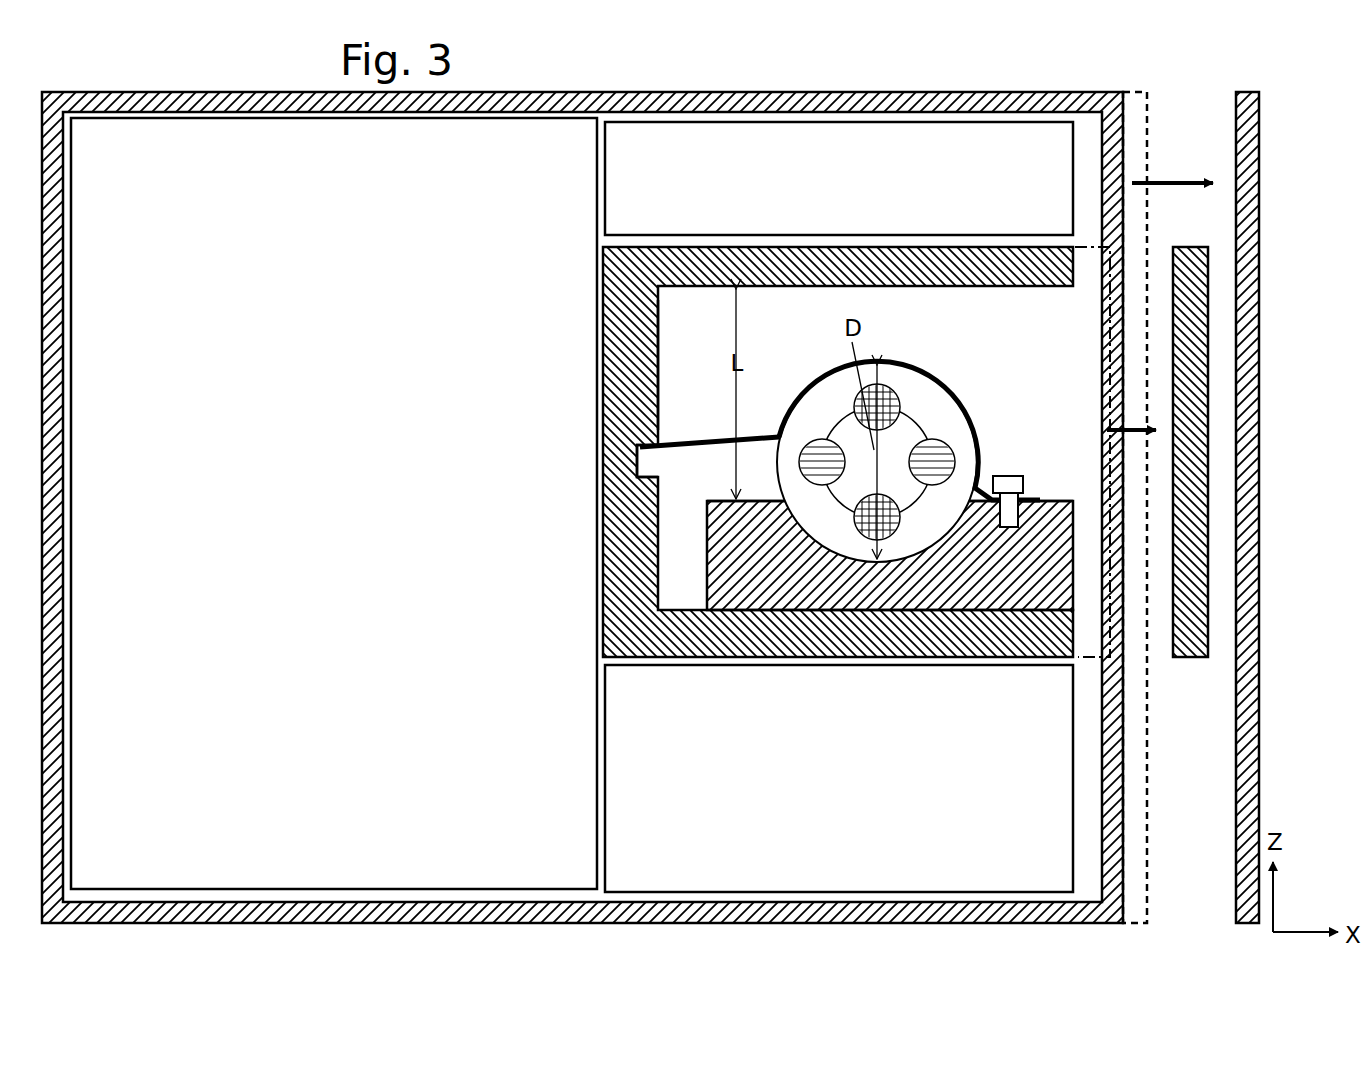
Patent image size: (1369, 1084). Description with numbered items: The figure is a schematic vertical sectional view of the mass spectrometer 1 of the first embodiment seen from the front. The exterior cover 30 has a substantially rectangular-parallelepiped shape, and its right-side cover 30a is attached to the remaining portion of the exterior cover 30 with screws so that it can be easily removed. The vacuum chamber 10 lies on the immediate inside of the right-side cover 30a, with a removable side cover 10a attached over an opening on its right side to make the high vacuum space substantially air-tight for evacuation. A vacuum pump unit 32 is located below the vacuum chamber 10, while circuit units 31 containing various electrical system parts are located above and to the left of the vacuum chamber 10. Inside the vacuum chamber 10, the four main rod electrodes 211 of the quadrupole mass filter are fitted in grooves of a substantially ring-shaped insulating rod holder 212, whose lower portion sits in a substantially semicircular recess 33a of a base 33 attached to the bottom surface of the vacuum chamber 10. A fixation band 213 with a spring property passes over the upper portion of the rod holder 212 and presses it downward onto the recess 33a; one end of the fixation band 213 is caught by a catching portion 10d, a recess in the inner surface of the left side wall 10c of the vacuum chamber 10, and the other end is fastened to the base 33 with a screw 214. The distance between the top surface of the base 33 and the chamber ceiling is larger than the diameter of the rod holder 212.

The mass spectrometer 1 is at (1166, 88).
The vacuum chamber 10 is at (865, 247).
The side cover 10a is at (1198, 297).
The left side wall 10c is at (659, 335).
The catching portion 10d is at (648, 462).
The exterior cover 30 is at (705, 92).
The right-side cover 30a is at (1260, 156).
The circuit units 31 is at (505, 128).
The vacuum pump unit 32 is at (905, 880).
The base 33 is at (718, 500).
The recess 33a is at (803, 520).
The main rod electrode 211 is at (862, 493).
The rod holder 212 is at (940, 398).
The fixation band 213 is at (715, 432).
The screw 214 is at (1015, 478).